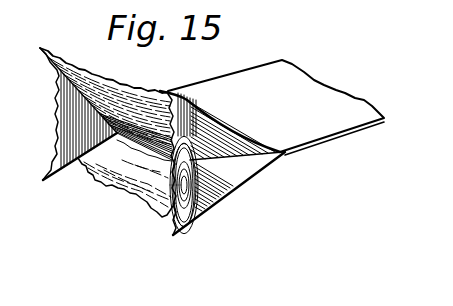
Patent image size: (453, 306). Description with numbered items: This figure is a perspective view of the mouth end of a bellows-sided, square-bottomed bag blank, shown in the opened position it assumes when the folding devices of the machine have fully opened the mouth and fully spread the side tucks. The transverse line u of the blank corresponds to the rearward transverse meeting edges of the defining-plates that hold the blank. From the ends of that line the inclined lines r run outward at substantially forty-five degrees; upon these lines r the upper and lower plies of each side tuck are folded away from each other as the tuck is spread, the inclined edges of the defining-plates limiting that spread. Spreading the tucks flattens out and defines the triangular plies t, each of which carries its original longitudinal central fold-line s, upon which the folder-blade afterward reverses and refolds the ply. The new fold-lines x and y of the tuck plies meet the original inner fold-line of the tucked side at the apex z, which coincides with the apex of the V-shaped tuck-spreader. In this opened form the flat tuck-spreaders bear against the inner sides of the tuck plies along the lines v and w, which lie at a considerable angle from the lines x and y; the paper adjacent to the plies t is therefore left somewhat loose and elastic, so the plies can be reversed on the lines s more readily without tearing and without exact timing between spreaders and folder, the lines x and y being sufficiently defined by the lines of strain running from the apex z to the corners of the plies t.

The fold-line x is at (80, 91).
The longitudinal central fold-line s is at (72, 120).
The triangular ply t is at (80, 135).
The fold-line y is at (84, 154).
The line of the blank u is at (140, 143).
The apex z is at (222, 212).
The line of contact v is at (189, 137).
The line of contact w is at (192, 222).
The fold-line r is at (233, 163).